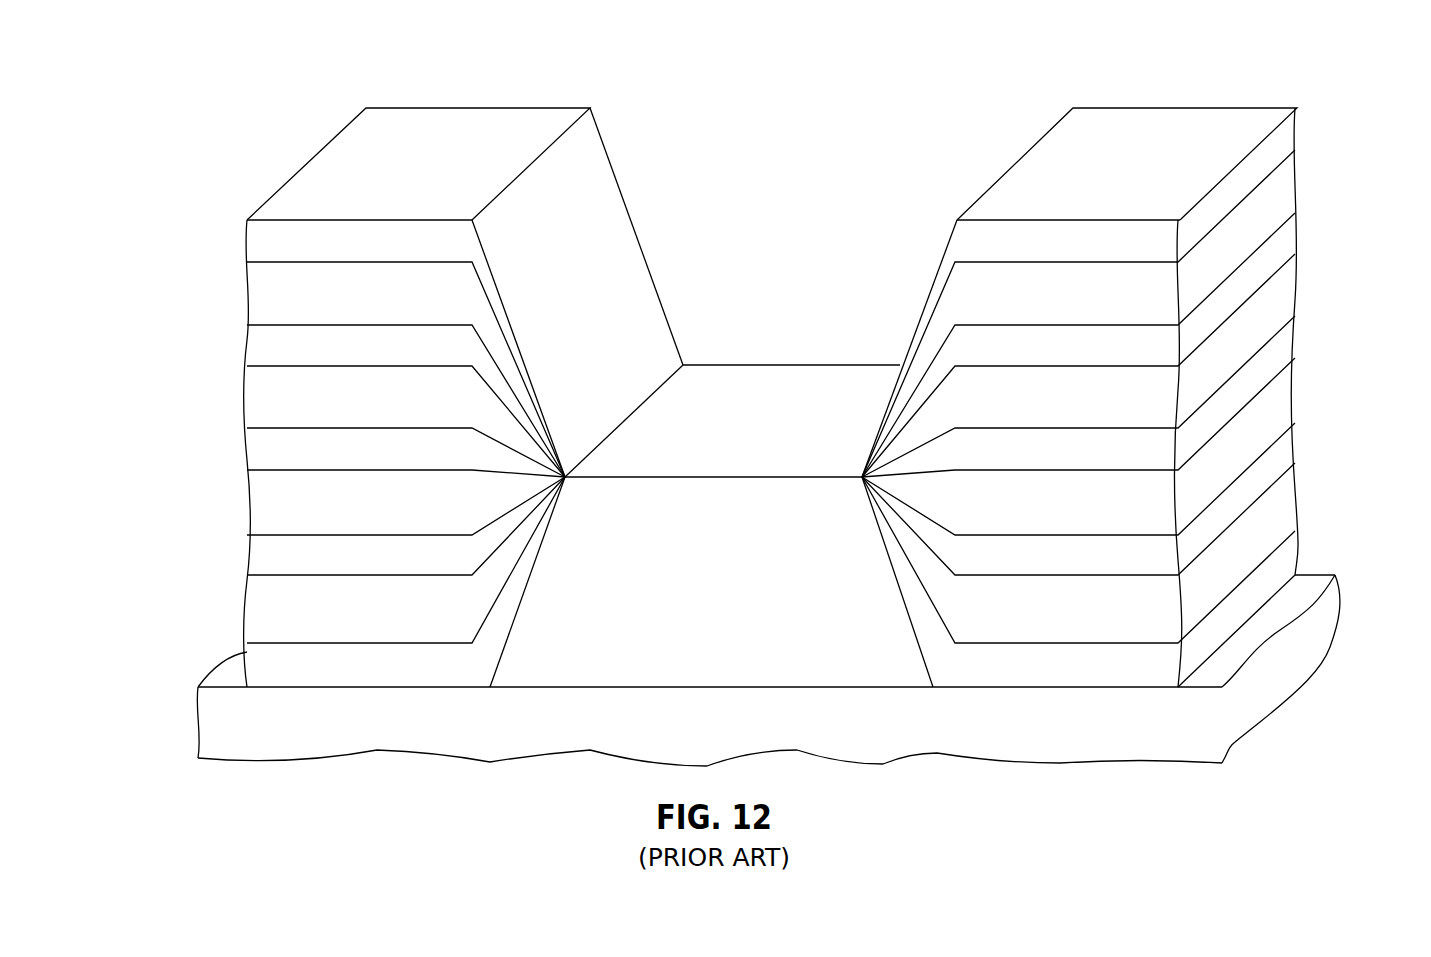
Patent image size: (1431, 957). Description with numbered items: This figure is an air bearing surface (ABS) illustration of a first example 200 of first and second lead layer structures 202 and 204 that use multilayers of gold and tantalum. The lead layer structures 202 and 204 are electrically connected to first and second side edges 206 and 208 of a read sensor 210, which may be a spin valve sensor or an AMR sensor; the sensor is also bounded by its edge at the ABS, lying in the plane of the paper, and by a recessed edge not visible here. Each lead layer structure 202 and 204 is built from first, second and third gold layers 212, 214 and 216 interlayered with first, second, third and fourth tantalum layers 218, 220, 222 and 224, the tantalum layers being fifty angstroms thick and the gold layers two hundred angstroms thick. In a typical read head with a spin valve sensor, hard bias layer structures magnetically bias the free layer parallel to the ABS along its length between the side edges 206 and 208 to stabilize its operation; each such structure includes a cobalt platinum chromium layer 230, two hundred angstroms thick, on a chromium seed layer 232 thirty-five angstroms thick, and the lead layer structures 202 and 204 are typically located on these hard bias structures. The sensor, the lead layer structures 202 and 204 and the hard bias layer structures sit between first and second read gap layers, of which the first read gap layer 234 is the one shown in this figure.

The first example of first and second lead layer structures 200 is at (865, 102).
The first lead layer structure 202 is at (470, 140).
The second lead layer structure 204 is at (1163, 138).
The first side edge 206 is at (517, 608).
The second side edge 208 is at (923, 613).
The read sensor 210 is at (756, 388).
The first gold layer 212 is at (250, 498).
The second gold layer 214 is at (250, 393).
The third gold layer 216 is at (250, 289).
The first tantalum layer 218 is at (250, 552).
The second tantalum layer 220 is at (250, 447).
The third tantalum layer 222 is at (250, 343).
The fourth tantalum layer 224 is at (250, 242).
The cobalt platinum chromium layer 230 is at (250, 598).
The chromium seed layer 232 is at (250, 663).
The first read gap layer 234 is at (534, 747).